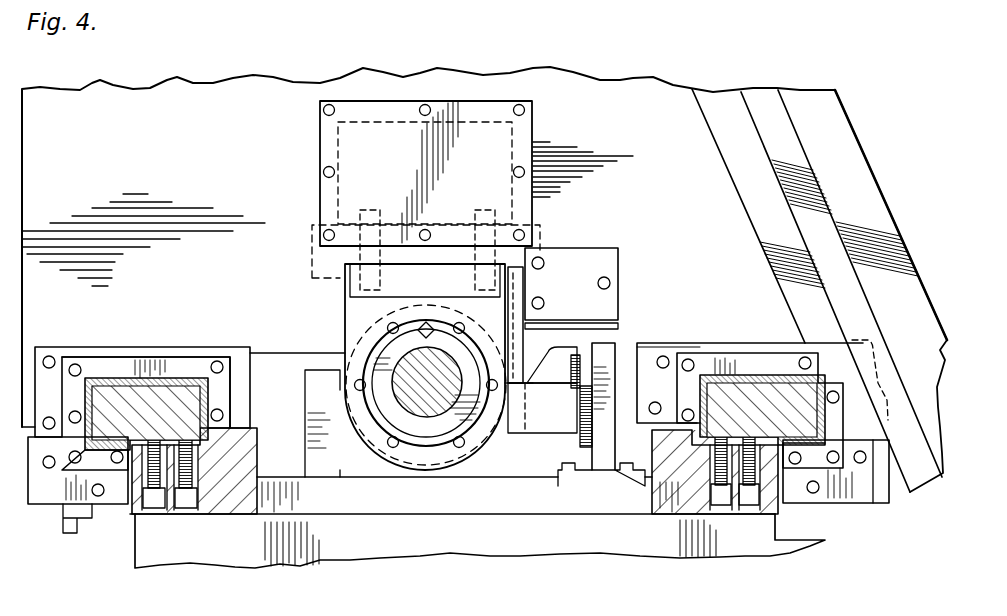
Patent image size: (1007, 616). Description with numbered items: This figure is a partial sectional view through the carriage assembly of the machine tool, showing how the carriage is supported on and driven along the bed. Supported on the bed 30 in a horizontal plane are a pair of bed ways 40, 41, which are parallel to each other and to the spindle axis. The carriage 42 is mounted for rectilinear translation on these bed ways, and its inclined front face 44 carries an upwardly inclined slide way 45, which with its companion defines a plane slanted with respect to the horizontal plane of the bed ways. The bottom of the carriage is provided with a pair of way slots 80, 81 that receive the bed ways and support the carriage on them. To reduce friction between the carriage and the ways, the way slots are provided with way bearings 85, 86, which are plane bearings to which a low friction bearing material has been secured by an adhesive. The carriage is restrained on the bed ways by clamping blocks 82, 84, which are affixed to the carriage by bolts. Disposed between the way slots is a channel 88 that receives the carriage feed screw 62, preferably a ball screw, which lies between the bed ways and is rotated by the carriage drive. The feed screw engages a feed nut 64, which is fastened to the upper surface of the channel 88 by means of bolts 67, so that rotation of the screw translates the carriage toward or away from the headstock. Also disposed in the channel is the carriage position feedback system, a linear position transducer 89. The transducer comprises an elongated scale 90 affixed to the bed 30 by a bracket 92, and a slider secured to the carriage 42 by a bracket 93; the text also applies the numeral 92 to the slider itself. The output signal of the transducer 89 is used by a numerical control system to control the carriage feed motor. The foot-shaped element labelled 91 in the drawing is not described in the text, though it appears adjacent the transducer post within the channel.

The bed 30 is at (322, 566).
The bed way 40 is at (810, 410).
The bed way 41 is at (195, 405).
The carriage 42 is at (190, 161).
The inclined front face 44 is at (845, 110).
The slide way 45 is at (903, 270).
The feed screw 62 is at (420, 412).
The feed nut 64 is at (359, 339).
The bolts 67 is at (372, 212).
The way slot 80 is at (733, 380).
The way slot 81 is at (133, 380).
The clamping block 82 is at (870, 503).
The clamping block 84 is at (47, 500).
The way bearing 85 is at (768, 358).
The way bearing 86 is at (170, 358).
The channel 88 is at (510, 470).
The linear position transducer 89 is at (611, 342).
The elongated scale 90 is at (590, 444).
The foot 91 is at (597, 480).
The bracket 92 is at (578, 392).
The bracket 93 is at (560, 352).